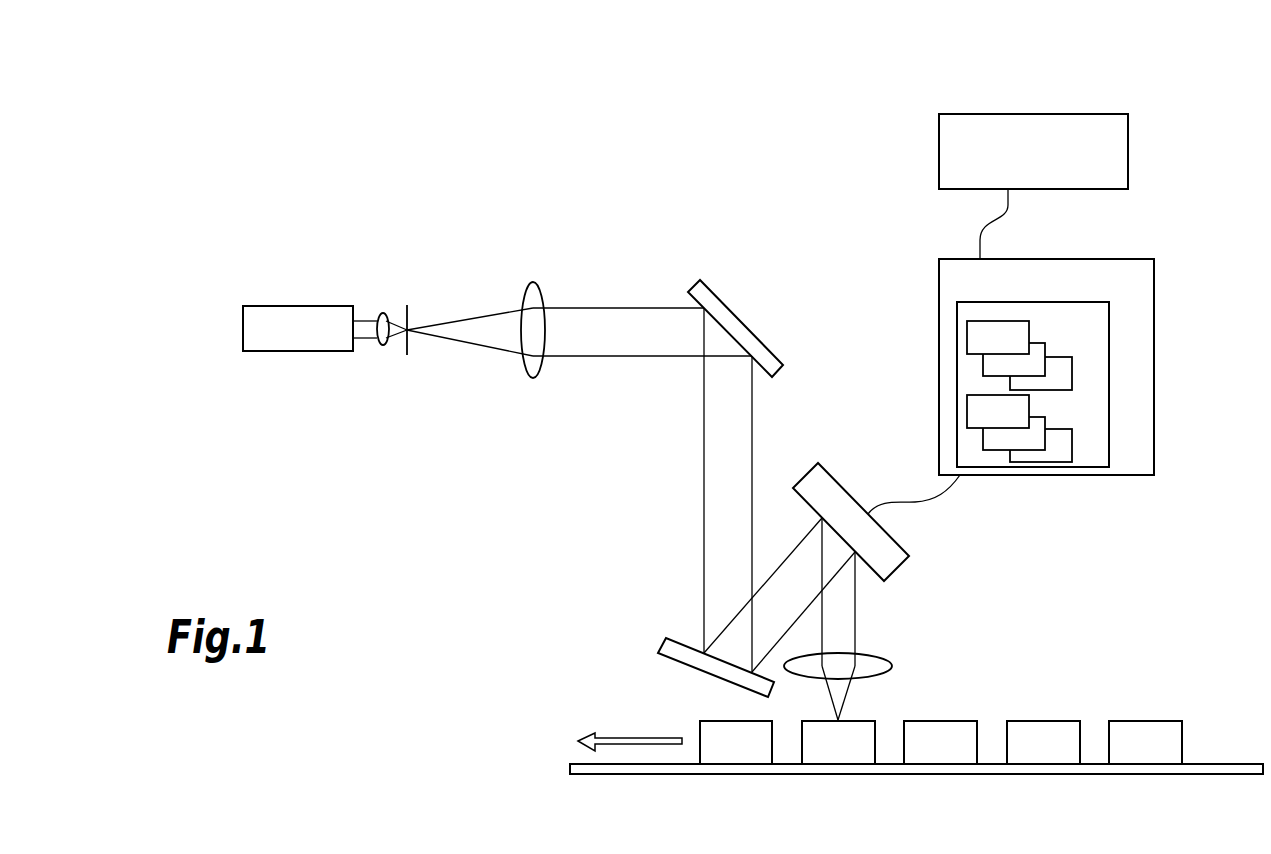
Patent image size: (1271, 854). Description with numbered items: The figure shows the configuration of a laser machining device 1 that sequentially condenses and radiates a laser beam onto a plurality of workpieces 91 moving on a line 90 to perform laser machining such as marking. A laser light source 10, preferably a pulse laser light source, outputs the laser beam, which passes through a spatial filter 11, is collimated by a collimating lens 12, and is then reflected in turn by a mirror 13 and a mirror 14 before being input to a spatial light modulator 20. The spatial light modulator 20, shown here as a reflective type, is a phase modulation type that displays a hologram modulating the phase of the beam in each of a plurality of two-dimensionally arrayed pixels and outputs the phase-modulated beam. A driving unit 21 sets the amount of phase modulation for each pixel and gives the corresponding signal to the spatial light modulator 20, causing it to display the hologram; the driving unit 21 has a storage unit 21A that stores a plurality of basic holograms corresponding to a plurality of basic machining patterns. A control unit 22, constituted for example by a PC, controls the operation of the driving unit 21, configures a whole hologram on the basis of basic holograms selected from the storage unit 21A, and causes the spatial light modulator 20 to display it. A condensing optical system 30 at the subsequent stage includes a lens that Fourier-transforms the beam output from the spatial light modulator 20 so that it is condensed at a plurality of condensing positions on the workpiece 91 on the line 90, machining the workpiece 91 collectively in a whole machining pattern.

The laser machining device 1 is at (225, 108).
The laser light source 10 is at (318, 306).
The spatial filter 11 is at (395, 307).
The collimating lens 12 is at (535, 282).
The mirror 13 is at (772, 348).
The mirror 14 is at (675, 663).
The spatial light modulator 20 is at (902, 542).
The driving unit 21 is at (1120, 259).
The storage unit 21A is at (1063, 302).
The control unit 22 is at (1093, 114).
The condensing optical system 30 is at (895, 666).
The line 90 is at (1228, 764).
The workpiece 91 is at (737, 753).